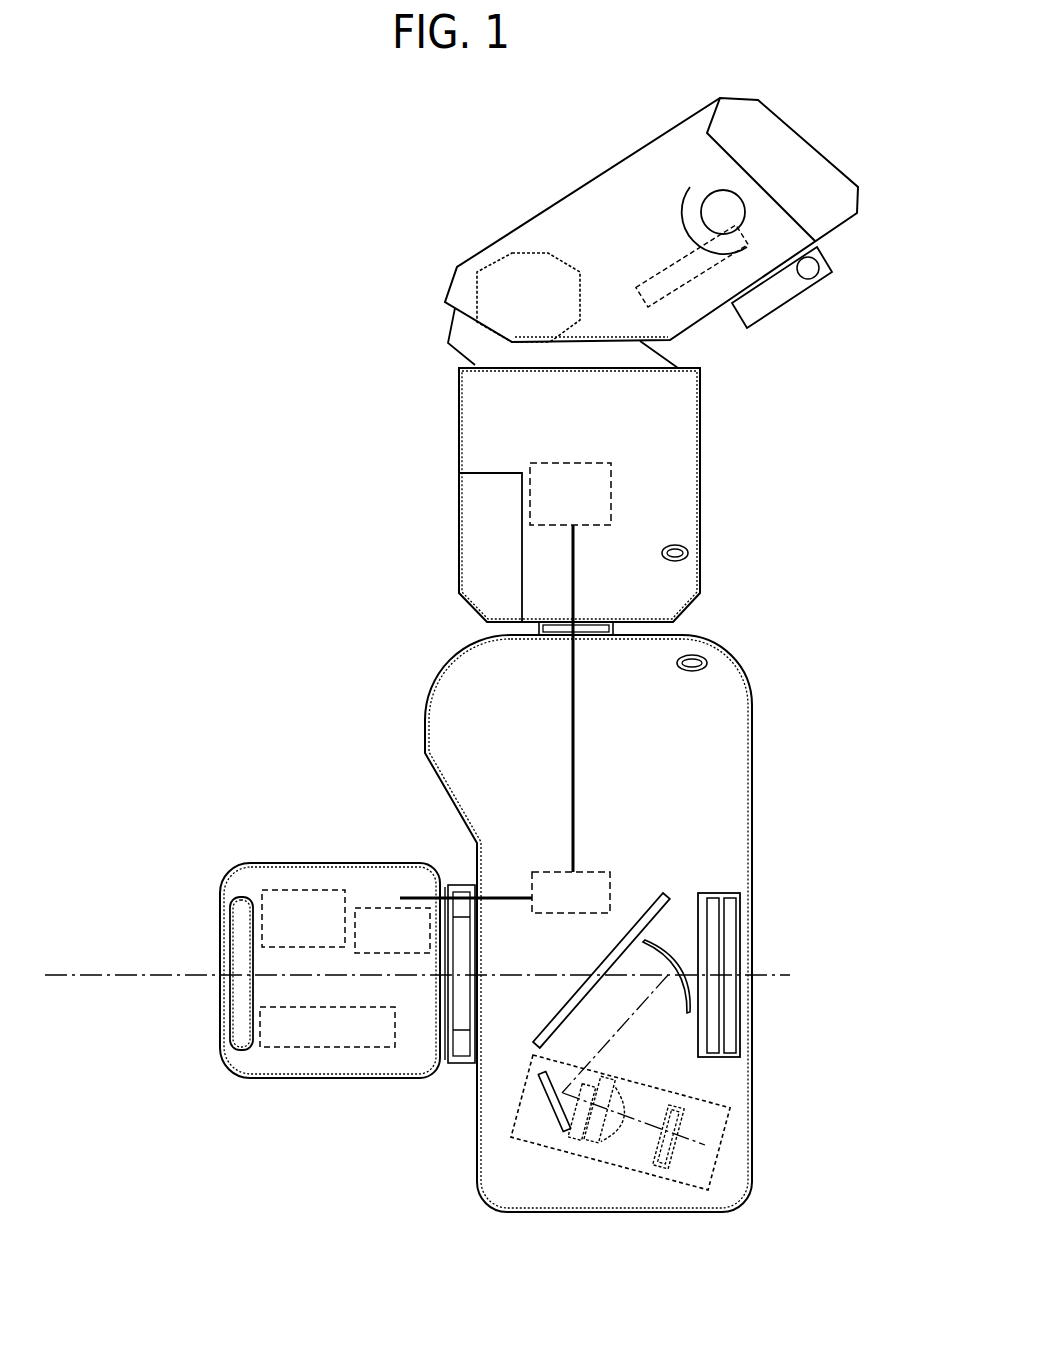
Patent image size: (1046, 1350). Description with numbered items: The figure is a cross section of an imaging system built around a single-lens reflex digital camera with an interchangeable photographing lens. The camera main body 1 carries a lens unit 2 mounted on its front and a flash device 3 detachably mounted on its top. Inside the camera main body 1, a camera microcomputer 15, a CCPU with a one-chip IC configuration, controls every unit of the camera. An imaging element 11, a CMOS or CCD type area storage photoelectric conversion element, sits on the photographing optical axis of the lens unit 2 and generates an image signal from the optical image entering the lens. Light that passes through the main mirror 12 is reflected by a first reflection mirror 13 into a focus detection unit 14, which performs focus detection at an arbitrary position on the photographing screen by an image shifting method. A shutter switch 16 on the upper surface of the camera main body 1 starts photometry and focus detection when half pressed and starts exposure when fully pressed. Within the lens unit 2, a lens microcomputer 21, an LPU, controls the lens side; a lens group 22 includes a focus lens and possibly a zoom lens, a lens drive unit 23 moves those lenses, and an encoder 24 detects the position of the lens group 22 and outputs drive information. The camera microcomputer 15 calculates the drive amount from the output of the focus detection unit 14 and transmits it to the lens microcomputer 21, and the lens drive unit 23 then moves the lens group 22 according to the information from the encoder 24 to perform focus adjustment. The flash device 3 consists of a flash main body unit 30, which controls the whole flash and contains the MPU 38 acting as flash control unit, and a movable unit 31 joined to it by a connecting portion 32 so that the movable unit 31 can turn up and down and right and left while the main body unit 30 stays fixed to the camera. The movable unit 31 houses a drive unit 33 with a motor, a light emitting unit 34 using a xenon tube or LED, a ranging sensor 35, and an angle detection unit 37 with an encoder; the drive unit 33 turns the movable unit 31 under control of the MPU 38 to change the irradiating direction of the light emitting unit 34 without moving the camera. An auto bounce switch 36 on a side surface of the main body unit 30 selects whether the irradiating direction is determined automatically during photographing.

The camera main body 1 is at (425, 700).
The lens unit 2 is at (277, 1080).
The flash device 3 is at (480, 472).
The imaging element 11 is at (733, 1012).
The main mirror 12 is at (655, 902).
The first reflection mirror 13 is at (660, 958).
The focus detection unit 14 is at (552, 1148).
The camera microcomputer 15 is at (593, 872).
The shutter switch 16 is at (720, 663).
The lens microcomputer 21 is at (373, 908).
The lens group 22 is at (223, 1013).
The lens drive unit 23 is at (290, 890).
The encoder 24 is at (345, 1047).
The flash main body unit 30 is at (690, 443).
The movable unit 31 is at (585, 202).
The connecting portion 32 is at (477, 347).
The drive unit 33 is at (560, 262).
The light emitting unit 34 is at (690, 195).
The ranging sensor 35 is at (783, 307).
The auto bounce switch 36 is at (688, 551).
The angle detection unit 37 is at (692, 323).
The MPU 38 is at (612, 493).